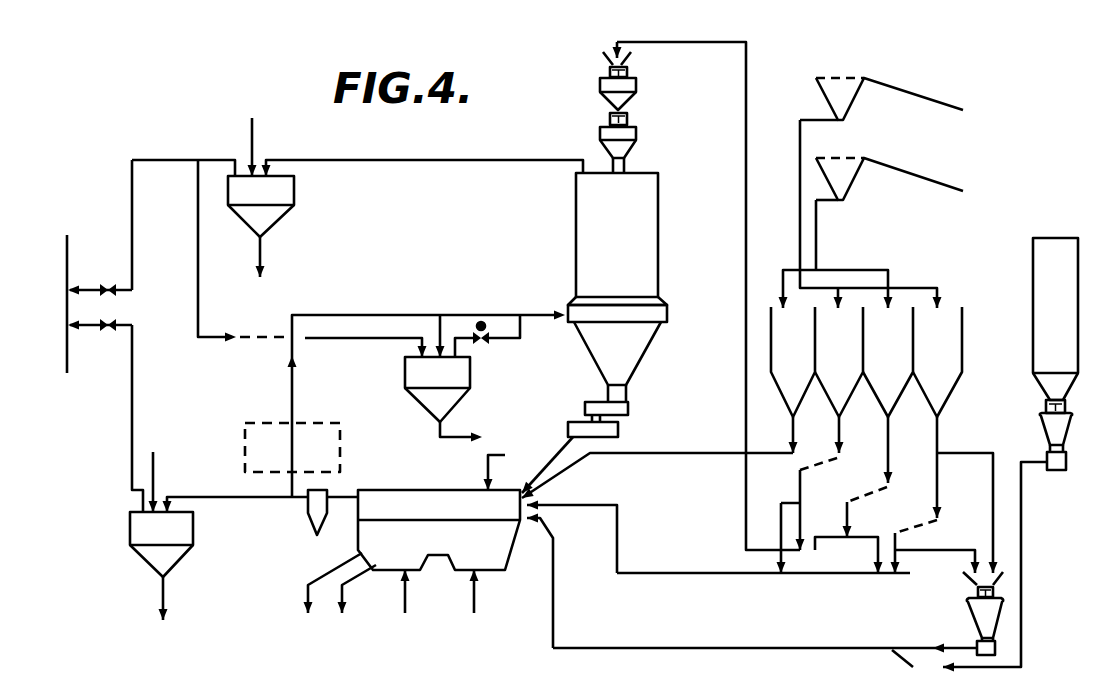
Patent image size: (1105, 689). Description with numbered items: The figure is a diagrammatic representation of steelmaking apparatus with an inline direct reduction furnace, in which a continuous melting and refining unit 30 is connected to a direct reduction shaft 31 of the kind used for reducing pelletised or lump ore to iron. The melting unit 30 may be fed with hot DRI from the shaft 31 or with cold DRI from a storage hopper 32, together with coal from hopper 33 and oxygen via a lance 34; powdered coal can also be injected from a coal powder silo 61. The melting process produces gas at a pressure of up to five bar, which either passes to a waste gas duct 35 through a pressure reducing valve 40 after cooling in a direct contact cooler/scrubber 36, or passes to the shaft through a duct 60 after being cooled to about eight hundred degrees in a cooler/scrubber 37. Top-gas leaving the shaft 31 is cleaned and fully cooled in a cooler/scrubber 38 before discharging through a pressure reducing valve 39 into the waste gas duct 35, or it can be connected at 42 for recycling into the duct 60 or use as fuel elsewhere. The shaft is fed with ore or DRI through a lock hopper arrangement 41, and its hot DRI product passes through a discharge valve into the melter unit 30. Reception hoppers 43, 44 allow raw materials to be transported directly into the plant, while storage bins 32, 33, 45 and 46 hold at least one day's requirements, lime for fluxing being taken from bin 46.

The continuous melting and refining unit 30 is at (385, 562).
The direct reduction shaft 31 is at (636, 267).
The storage hopper 32 is at (893, 390).
The coal hopper 33 is at (948, 388).
The oxygen lance 34 is at (486, 462).
The waste gas duct 35 is at (67, 373).
The direct contact cooler/scrubber 36 is at (185, 532).
The direct contact cooler/scrubber 37 is at (463, 378).
The direct contact cooler/scrubber 38 is at (268, 213).
The pressure reducing valve 39 is at (116, 268).
The pressure reducing valve 40 is at (93, 333).
The lock hopper arrangement 41 is at (640, 108).
The connection for recycling cooled gas 42 is at (212, 340).
The reception hopper 43 is at (830, 95).
The reception hopper 44 is at (830, 178).
The storage bin 45 is at (840, 393).
The lime bin 46 is at (788, 390).
The duct 60 is at (292, 392).
The coal powder silo 61 is at (1045, 282).